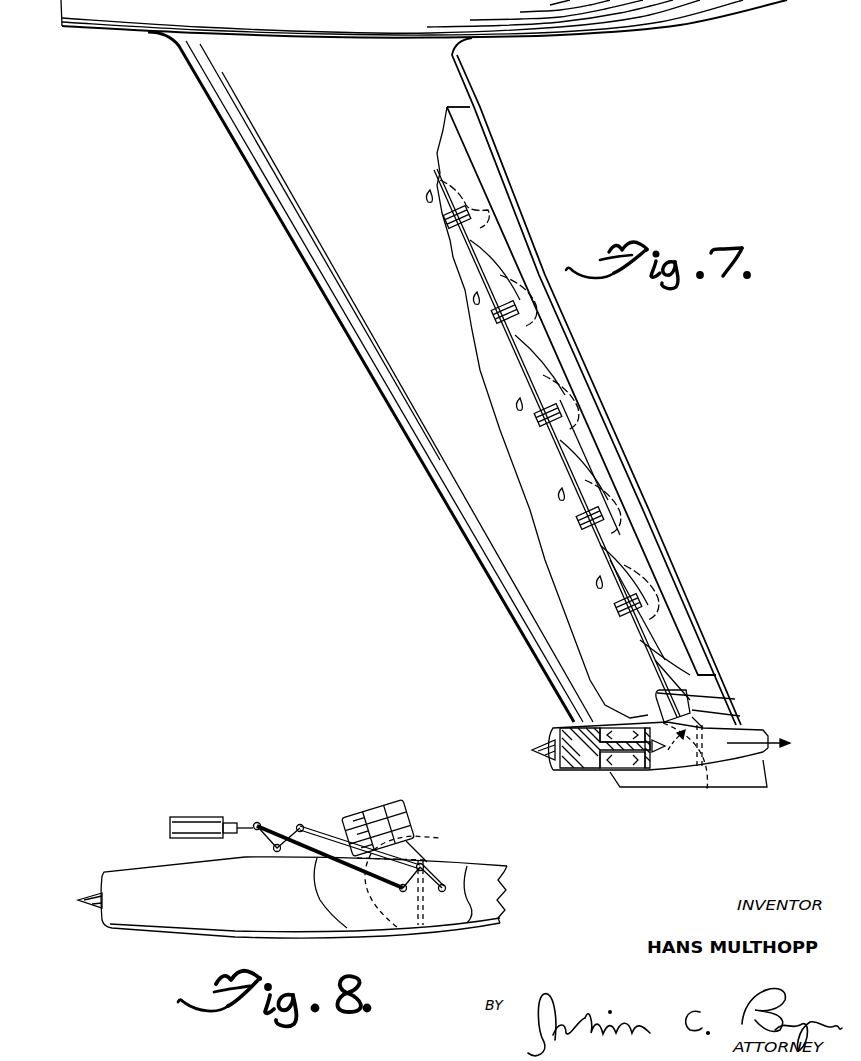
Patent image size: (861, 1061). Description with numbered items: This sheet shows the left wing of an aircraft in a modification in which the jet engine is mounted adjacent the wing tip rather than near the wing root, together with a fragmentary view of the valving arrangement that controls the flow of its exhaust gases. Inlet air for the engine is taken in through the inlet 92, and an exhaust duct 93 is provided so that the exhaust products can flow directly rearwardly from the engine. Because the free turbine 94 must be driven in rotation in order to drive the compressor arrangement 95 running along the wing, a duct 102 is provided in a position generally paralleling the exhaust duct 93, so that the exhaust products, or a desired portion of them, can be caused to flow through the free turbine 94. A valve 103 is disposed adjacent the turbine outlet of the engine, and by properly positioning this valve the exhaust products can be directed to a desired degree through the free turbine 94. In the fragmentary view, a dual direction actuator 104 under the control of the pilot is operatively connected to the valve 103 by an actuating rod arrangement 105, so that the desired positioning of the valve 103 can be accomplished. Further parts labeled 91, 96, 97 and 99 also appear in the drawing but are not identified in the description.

In FIG. 7, the engine core 91 is at (586, 771).
In FIG. 7, the inlet 92 is at (552, 735).
In FIG. 7, the exhaust duct 93 is at (765, 730).
In FIG. 7, the free turbine 94 is at (687, 709).
In FIG. 8, the free turbine 94 is at (404, 812).
In FIG. 7, the compressor arrangement 95 is at (518, 435).
In FIG. 7, the shaft bearings 96 is at (623, 513).
In FIG. 7, the trough wall 97 is at (640, 618).
In FIG. 7, the trough 99 is at (585, 448).
In FIG. 7, the duct 102 is at (673, 713).
In FIG. 7, the valve 103 is at (707, 790).
In FIG. 8, the valve 103 is at (440, 839).
In FIG. 8, the dual direction actuator 104 is at (218, 817).
In FIG. 8, the actuating rod arrangement 105 is at (312, 828).